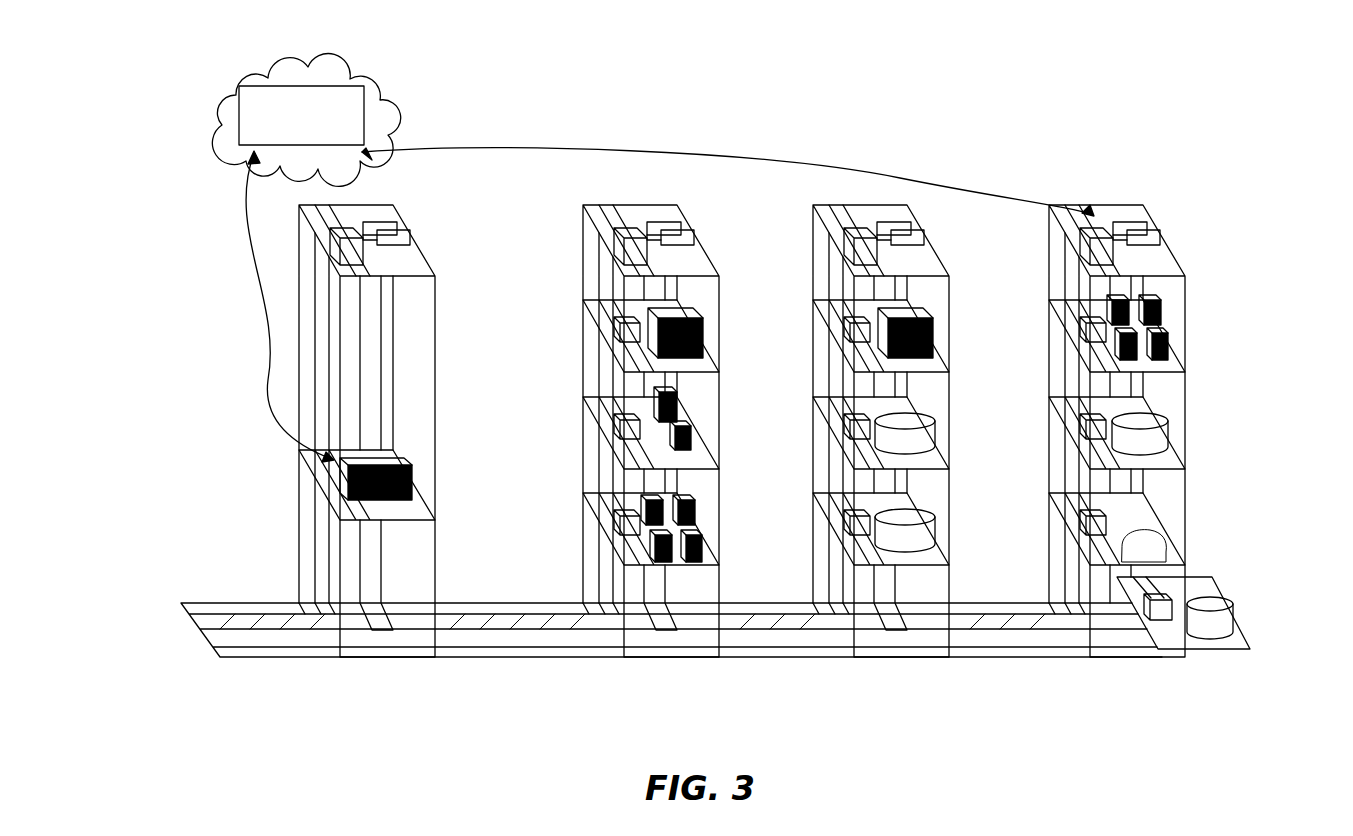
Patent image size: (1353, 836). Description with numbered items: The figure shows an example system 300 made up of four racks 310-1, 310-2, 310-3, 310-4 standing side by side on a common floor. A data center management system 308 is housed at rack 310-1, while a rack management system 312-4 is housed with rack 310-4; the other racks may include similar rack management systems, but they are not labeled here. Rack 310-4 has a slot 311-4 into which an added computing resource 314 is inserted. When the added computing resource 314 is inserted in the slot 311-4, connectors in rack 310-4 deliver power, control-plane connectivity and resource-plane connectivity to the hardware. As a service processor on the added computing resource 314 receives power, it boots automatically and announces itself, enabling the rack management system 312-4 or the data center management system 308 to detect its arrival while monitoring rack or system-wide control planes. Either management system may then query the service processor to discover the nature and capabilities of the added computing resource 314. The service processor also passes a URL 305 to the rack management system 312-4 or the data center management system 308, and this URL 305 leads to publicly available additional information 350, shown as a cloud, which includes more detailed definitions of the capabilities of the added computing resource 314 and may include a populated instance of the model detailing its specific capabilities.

The system 300 is at (795, 47).
The additional information 350 is at (306, 120).
The URL 305 is at (638, 298).
The data center management system 308 is at (337, 459).
The rack 310-1 is at (299, 449).
The rack 310-2 is at (651, 449).
The rack 310-3 is at (881, 449).
The rack 310-4 is at (1125, 409).
The rack management system 312-4 is at (1098, 222).
The slot 311-4 is at (1166, 531).
The added computing resource 314 is at (1217, 650).